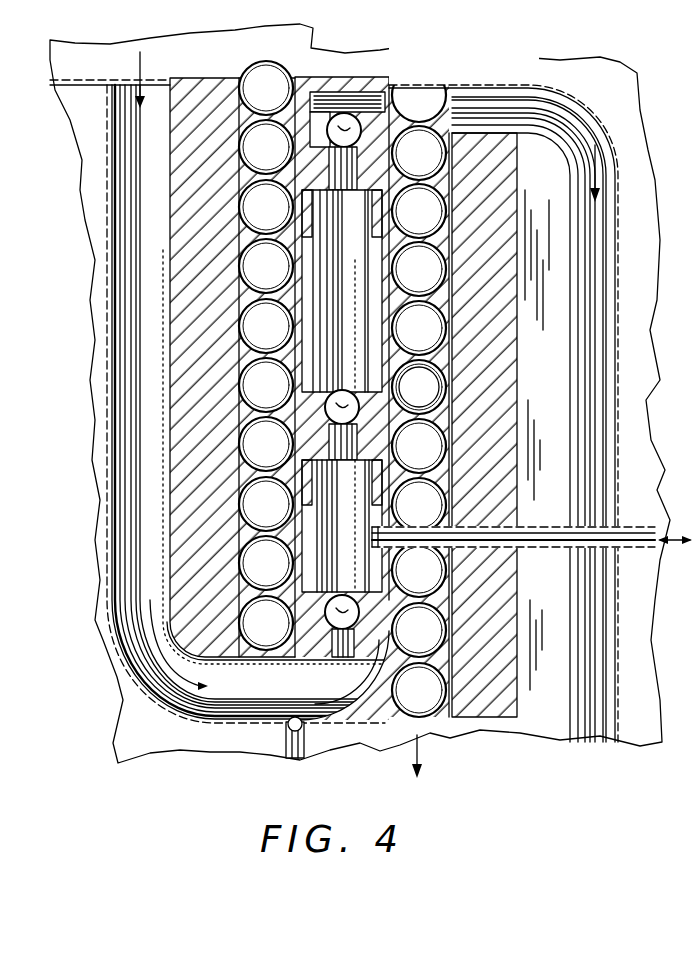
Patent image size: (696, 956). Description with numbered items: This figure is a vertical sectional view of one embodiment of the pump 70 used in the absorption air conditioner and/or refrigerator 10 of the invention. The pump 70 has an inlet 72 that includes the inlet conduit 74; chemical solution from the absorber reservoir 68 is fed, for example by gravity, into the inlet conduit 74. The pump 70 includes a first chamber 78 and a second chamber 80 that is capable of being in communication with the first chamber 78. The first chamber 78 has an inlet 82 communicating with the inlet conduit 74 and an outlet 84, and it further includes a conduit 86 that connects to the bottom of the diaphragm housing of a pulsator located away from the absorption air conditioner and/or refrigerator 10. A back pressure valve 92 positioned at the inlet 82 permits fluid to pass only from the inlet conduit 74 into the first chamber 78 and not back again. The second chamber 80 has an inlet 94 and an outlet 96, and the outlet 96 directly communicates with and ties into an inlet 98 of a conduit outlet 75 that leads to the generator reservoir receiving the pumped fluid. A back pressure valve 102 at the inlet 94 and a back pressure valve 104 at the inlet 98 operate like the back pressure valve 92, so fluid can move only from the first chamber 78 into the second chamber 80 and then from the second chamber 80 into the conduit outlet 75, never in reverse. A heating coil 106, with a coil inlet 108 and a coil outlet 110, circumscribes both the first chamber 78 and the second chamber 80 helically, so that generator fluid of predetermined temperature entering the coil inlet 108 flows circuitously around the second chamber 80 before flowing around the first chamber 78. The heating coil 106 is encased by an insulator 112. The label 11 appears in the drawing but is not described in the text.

The absorption air conditioner and/or refrigerator 10 is at (432, 385).
The motion direction 11 is at (677, 563).
The absorber reservoir 68 is at (166, 66).
The pump 70 is at (412, 38).
The inlet 72 is at (117, 712).
The inlet conduit 74 is at (84, 183).
The conduit outlet 75 is at (597, 210).
The first chamber 78 is at (135, 605).
The second chamber 80 is at (200, 318).
The inlet 82 is at (340, 650).
The outlet 84 is at (187, 563).
The conduit 86 is at (552, 548).
The back pressure valve 92 is at (300, 560).
The inlet 94 is at (187, 500).
The outlet 96 is at (536, 87).
The inlet 98 is at (491, 84).
The back pressure valve 102 is at (185, 456).
The back pressure valve 104 is at (402, 93).
The heating coil 106 is at (257, 78).
The coil inlet 108 is at (401, 332).
The coil outlet 110 is at (397, 727).
The insulator 112 is at (165, 246).